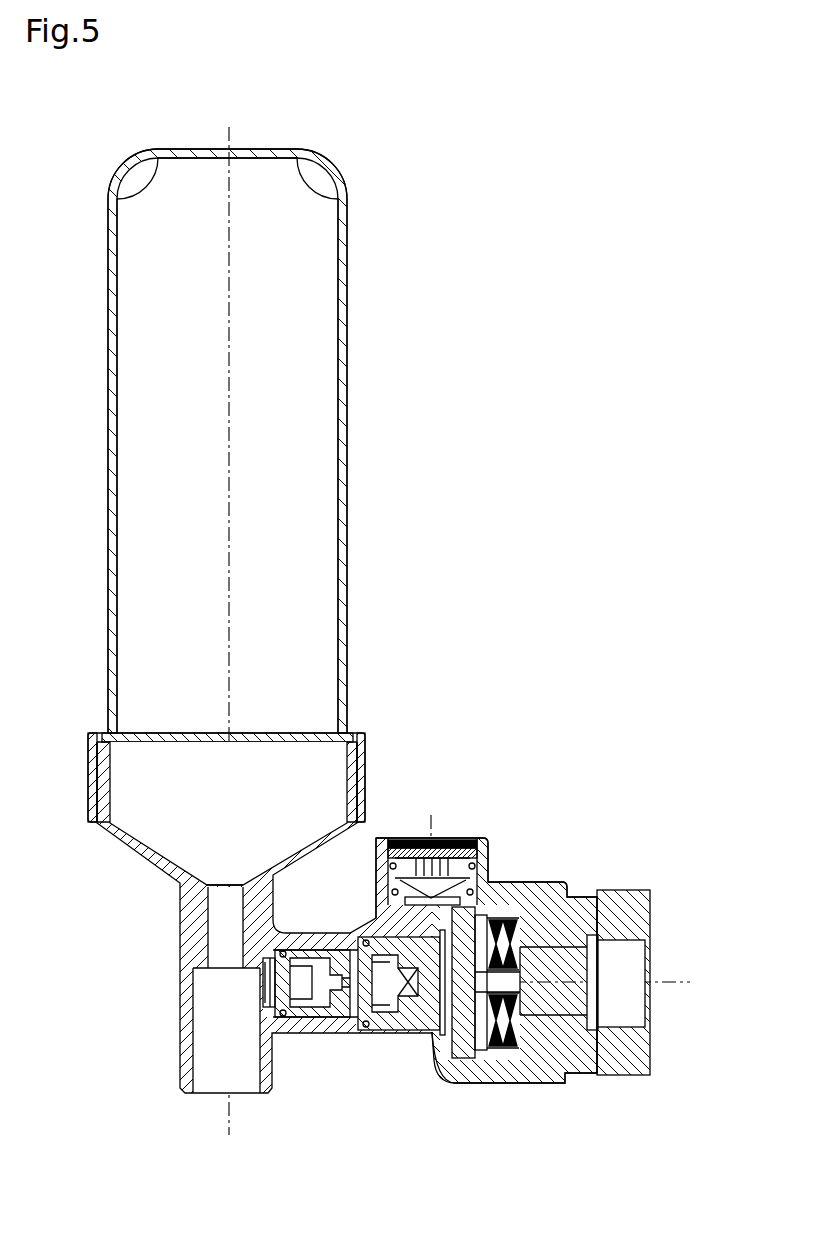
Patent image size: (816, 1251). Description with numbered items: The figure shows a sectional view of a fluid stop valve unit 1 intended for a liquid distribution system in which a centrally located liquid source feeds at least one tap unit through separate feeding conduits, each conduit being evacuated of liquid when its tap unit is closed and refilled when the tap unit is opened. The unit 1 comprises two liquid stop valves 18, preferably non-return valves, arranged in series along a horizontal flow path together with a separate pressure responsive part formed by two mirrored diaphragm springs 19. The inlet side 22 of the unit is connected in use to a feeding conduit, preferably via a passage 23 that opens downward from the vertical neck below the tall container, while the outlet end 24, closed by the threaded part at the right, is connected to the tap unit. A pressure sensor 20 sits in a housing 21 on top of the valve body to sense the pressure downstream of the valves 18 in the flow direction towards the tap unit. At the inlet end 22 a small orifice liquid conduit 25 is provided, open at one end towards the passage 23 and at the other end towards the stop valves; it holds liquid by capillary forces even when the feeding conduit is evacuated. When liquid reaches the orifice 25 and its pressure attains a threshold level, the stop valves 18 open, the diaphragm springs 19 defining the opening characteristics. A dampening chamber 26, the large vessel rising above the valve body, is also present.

The fluid stop valve unit 1 is at (527, 838).
The liquid stop valve 18 is at (390, 965).
The diaphragm spring 19 is at (485, 1050).
The pressure sensor 20 is at (453, 837).
The housing 21 is at (527, 893).
The inlet side 22 is at (277, 1025).
The passage 23 is at (238, 1070).
The outlet end 24 is at (625, 1057).
The small orifice liquid conduit 25 is at (257, 988).
The dampening chamber 26 is at (296, 521).